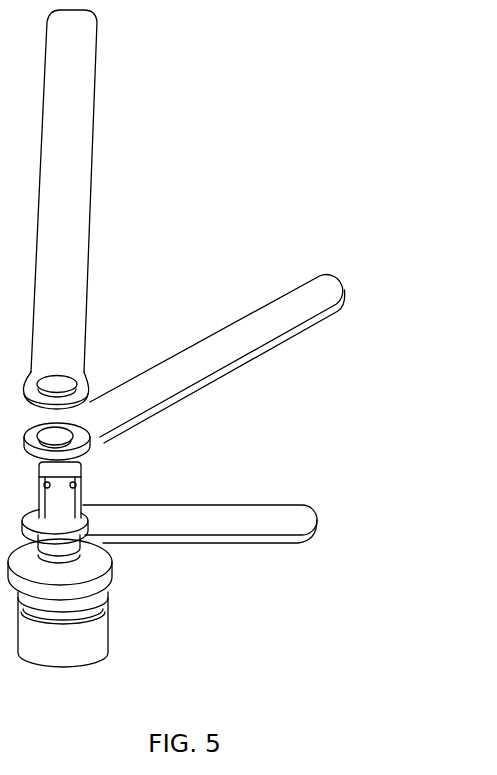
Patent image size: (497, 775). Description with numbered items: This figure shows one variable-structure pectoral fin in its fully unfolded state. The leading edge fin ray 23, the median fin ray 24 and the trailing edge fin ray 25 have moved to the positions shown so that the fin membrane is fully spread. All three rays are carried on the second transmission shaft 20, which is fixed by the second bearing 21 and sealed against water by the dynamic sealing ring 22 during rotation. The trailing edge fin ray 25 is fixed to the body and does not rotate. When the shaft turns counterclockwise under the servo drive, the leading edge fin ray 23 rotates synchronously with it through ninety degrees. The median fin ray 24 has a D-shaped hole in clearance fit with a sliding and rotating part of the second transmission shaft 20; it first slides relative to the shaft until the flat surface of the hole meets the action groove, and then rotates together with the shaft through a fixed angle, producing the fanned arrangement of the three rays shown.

The second transmission shaft 20 is at (90, 541).
The second bearing 21 is at (53, 608).
The dynamic sealing ring 22 is at (90, 587).
The leading edge fin ray 23 is at (45, 327).
The median fin ray 24 is at (107, 408).
The trailing edge fin ray 25 is at (205, 518).